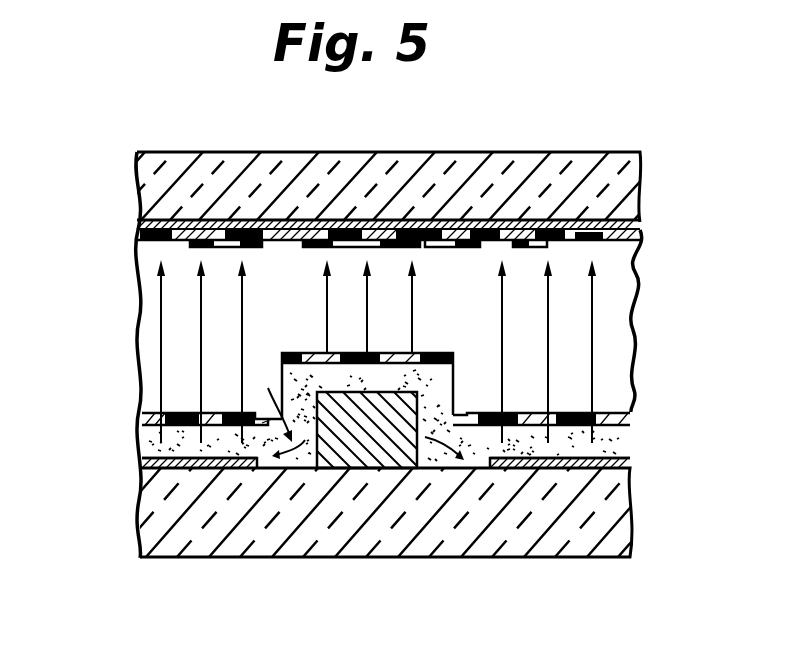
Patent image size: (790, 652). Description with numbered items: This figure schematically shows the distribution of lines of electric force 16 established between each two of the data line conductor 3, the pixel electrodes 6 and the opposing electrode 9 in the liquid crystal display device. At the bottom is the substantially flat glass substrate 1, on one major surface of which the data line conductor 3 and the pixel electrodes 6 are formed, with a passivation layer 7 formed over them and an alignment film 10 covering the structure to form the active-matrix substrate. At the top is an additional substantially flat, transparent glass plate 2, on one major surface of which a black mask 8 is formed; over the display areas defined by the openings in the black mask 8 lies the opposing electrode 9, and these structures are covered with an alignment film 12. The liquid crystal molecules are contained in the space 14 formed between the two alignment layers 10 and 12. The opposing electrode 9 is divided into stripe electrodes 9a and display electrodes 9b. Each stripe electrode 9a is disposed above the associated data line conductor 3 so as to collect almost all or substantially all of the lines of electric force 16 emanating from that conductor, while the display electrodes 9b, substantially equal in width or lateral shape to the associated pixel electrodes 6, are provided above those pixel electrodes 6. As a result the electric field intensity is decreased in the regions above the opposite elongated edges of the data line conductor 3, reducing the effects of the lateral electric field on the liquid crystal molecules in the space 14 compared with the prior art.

The glass substrate 1 is at (615, 525).
The glass plate 2 is at (630, 180).
The data line conductor 3 is at (405, 420).
The pixel electrode 6 is at (630, 462).
The passivation layer 7 is at (632, 440).
The black mask 8 is at (440, 232).
The opposing electrode 9 is at (388, 160).
The stripe electrode 9a is at (200, 126).
The display electrode 9b is at (220, 238).
The alignment film 10 is at (150, 414).
The alignment film 12 is at (637, 284).
The space 14 is at (140, 300).
The lines of electric force 16 is at (161, 345).